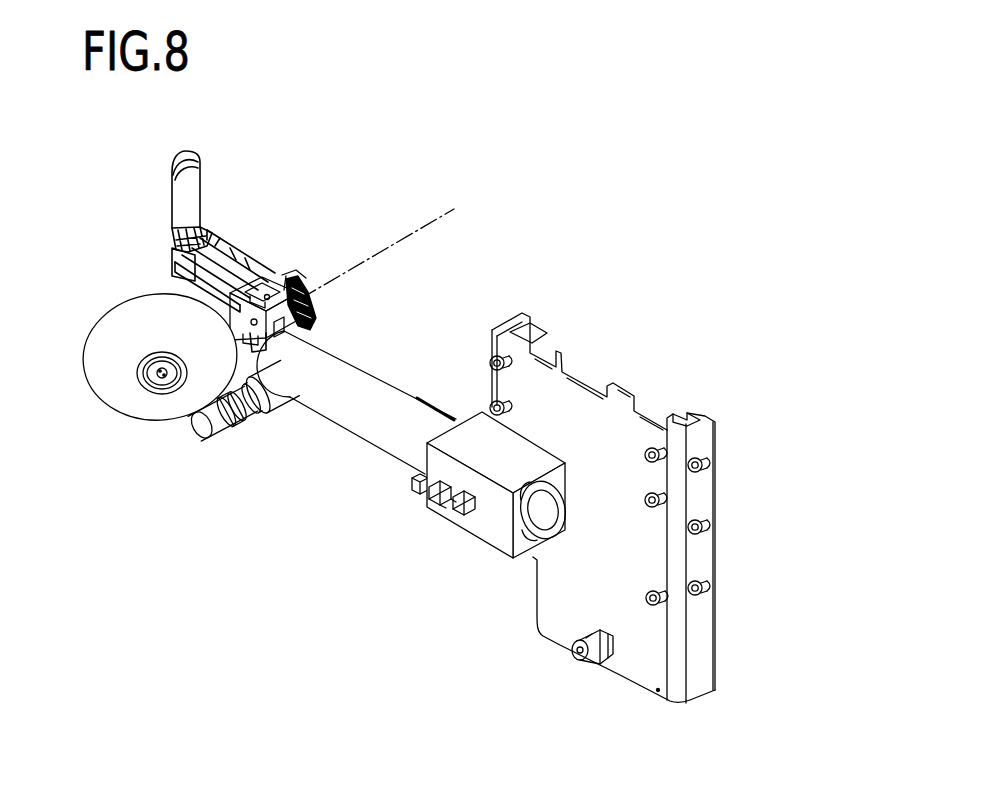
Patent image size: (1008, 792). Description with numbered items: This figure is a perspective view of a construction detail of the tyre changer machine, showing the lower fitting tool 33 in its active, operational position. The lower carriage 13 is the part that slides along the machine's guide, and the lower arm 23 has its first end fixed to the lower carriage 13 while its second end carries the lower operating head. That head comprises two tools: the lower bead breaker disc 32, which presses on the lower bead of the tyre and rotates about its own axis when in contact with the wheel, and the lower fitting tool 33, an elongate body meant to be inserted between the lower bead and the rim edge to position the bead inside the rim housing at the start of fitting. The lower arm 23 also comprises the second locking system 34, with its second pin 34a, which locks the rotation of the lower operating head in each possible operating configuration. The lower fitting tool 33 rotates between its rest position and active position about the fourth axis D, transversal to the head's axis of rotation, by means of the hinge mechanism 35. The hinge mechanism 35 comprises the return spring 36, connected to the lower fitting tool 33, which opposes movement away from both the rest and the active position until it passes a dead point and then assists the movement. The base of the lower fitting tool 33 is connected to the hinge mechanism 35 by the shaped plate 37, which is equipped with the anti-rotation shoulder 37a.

The lower carriage 13 is at (603, 447).
The lower arm 23 is at (377, 415).
The lower bead breaker disc 32 is at (107, 368).
The lower fitting tool 33 is at (190, 195).
The second locking system 34 is at (247, 427).
The second pin 34a is at (205, 422).
The hinge mechanism 35 is at (305, 267).
The return spring 36 is at (308, 297).
The shaped plate 37 is at (243, 312).
The anti-rotation shoulder 37a is at (257, 285).
The fourth axis D is at (418, 228).